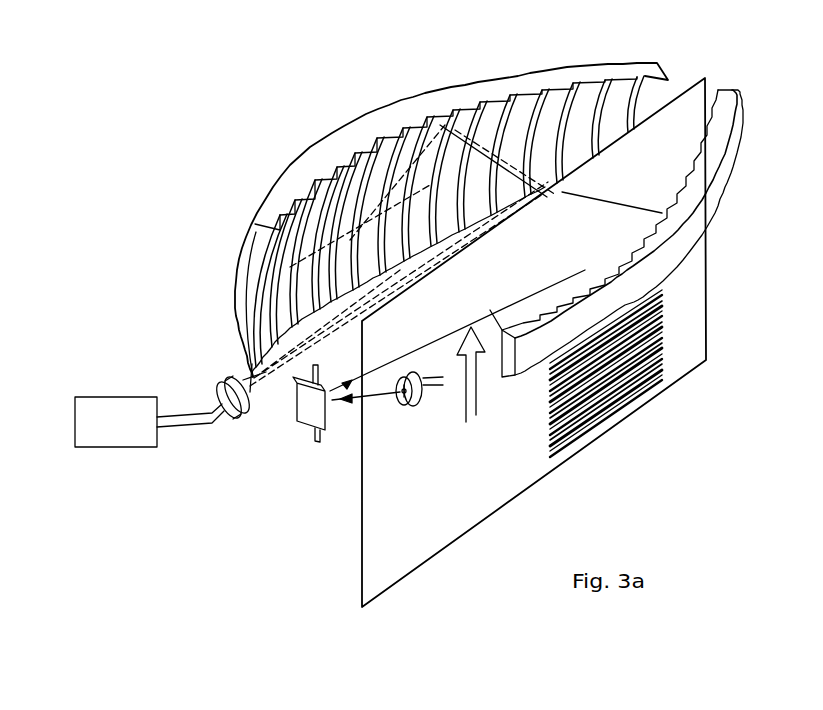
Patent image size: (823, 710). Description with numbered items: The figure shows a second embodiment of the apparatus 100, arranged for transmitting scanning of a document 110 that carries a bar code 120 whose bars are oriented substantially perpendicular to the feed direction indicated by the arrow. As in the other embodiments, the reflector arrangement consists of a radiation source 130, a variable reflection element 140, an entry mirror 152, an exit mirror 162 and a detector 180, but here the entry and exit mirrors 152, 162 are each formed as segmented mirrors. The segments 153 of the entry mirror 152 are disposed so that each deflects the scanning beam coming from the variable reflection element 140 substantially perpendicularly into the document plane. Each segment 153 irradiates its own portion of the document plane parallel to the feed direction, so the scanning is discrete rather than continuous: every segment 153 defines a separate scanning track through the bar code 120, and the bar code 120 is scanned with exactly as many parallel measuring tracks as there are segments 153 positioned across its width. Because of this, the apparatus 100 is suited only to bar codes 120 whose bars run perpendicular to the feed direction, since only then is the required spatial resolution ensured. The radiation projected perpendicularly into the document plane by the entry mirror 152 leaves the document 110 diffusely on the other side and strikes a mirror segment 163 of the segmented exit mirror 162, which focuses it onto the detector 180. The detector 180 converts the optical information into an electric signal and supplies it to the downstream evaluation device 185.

The apparatus 100 is at (216, 128).
The document 110 is at (360, 514).
The bar code 120 is at (550, 442).
The radiation source 130 is at (405, 405).
The variable reflection element 140 is at (300, 418).
The entry mirror 152 is at (616, 233).
The segments of the entry mirror 153 is at (720, 90).
The exit mirror 162 is at (493, 93).
The mirror segment of the exit mirror 163 is at (617, 95).
The detector 180 is at (218, 412).
The evaluation device 185 is at (75, 434).